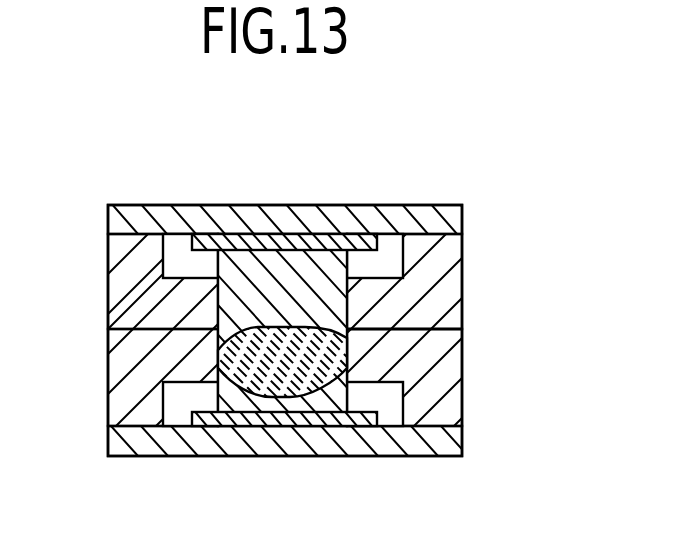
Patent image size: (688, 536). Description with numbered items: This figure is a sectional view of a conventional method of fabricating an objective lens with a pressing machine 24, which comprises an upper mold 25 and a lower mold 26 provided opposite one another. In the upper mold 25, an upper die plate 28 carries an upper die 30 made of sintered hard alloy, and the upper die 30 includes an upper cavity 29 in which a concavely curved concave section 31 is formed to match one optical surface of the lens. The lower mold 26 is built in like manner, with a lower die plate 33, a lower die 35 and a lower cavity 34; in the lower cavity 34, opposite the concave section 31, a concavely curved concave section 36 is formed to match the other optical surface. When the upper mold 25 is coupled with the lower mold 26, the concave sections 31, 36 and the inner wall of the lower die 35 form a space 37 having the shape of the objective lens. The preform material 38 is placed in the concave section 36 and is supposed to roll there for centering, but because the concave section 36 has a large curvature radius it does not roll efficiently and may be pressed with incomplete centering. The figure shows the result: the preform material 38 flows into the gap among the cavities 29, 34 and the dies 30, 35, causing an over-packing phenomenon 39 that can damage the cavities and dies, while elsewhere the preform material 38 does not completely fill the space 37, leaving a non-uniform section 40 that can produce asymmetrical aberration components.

The pressing machine 24 is at (317, 148).
The upper mold 25 is at (432, 202).
The lower mold 26 is at (389, 457).
The upper die plate 28 is at (452, 218).
The upper cavity 29 is at (246, 273).
The upper die 30 is at (446, 271).
The concave section 31 is at (215, 348).
The lower die plate 33 is at (445, 443).
The lower cavity 34 is at (312, 414).
The lower die 35 is at (437, 404).
The concave section 36 is at (315, 372).
The space 37 is at (313, 332).
The preform material 38 is at (215, 392).
The over-packing phenomenon 39 is at (405, 323).
The non-uniform section 40 is at (217, 327).